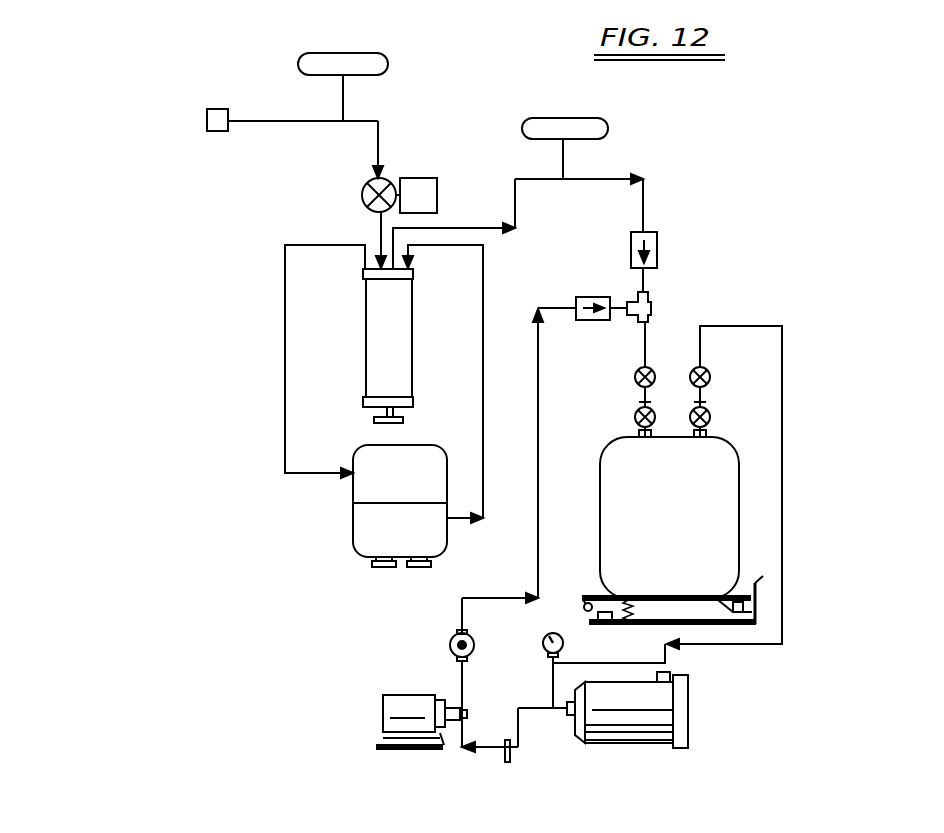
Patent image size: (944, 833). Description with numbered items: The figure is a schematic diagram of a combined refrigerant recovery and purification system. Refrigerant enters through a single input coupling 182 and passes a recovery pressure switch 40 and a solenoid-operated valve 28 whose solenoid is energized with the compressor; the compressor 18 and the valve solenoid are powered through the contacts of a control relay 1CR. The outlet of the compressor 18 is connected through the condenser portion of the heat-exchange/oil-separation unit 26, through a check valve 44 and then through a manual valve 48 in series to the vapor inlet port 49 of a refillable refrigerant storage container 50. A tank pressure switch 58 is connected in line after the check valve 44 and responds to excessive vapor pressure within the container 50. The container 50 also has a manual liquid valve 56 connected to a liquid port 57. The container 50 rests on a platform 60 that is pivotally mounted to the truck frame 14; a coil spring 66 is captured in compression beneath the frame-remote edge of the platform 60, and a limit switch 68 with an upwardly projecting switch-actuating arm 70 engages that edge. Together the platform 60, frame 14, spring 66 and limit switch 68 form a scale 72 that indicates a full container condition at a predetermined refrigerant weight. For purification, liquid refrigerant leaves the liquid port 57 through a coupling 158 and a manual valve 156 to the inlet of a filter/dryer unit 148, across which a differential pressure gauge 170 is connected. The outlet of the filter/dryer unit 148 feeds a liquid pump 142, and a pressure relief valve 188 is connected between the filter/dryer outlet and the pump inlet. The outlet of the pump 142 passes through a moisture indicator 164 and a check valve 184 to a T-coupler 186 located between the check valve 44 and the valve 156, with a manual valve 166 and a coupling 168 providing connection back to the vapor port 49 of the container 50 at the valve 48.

The recovery pressure switch 40 is at (388, 62).
The input coupling 182 is at (205, 112).
The valve 28 is at (360, 191).
The control relay 1CR is at (430, 178).
The heat-exchange/oil-separation unit 26 is at (360, 321).
The compressor 18 is at (355, 527).
The tank pressure switch 58 is at (608, 126).
The check valve 44 is at (658, 248).
The check valve 184 is at (588, 297).
The T-coupler 186 is at (655, 302).
The manual valve 166 is at (638, 368).
The coupling 168 is at (640, 401).
The manual valve 48 is at (635, 418).
The manual valve 156 is at (707, 368).
The coupling 158 is at (705, 401).
The manual liquid valve 56 is at (711, 418).
The vapor inlet port 49 is at (633, 440).
The liquid port 57 is at (710, 440).
The refrigerant storage container 50 is at (744, 516).
The scale 72 is at (576, 582).
The switch-actuating arm 70 is at (592, 598).
The platform 60 is at (671, 596).
The coil spring 66 is at (637, 606).
The limit switch 68 is at (615, 622).
The truck frame 14 is at (757, 600).
The moisture indicator 164 is at (449, 640).
The differential pressure gauge 170 is at (543, 645).
The pressure relief valve 188 is at (505, 740).
The liquid pump 142 is at (383, 705).
The filter/dryer unit 148 is at (674, 710).